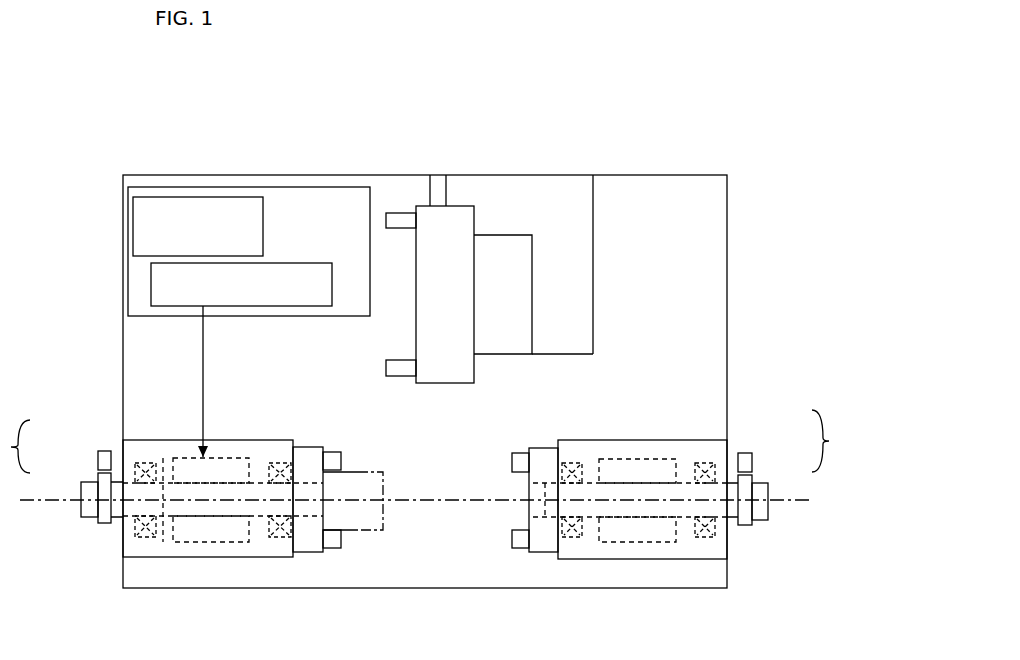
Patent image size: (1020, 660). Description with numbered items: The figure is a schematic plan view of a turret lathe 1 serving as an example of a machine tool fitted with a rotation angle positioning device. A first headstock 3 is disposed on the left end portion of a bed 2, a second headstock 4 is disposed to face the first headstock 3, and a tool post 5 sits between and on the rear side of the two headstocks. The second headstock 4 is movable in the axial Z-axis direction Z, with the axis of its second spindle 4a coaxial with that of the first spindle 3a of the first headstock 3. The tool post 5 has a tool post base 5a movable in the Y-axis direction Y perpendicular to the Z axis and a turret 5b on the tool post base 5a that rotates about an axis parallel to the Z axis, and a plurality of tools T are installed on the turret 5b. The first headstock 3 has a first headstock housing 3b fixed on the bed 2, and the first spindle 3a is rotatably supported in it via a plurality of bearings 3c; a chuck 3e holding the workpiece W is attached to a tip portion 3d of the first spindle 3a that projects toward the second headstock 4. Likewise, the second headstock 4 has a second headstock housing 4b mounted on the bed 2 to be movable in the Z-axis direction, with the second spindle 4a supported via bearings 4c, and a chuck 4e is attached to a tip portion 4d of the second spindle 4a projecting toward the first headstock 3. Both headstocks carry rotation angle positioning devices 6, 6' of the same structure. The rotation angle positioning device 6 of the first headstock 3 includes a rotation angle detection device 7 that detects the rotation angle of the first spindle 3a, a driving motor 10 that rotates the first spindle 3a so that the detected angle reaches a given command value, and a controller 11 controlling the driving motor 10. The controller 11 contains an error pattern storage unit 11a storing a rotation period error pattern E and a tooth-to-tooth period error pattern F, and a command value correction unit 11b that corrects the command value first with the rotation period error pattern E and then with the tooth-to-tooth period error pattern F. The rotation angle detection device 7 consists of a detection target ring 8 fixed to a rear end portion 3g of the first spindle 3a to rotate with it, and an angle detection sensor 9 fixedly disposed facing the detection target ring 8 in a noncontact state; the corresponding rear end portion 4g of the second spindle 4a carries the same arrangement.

The turret lathe 1 is at (533, 118).
The bed 2 is at (665, 191).
The first headstock 3 is at (148, 435).
The first spindle 3a is at (163, 458).
The first headstock housing 3b is at (248, 440).
The bearings 3c is at (145, 464).
The tip portion 3d is at (303, 482).
The chuck 3e is at (318, 447).
The rear end portion 3g is at (88, 512).
The second headstock 4 is at (714, 439).
The second spindle 4a is at (680, 458).
The second headstock housing 4b is at (607, 440).
The bearings 4c is at (572, 463).
The tip portion 4d is at (545, 483).
The chuck 4e is at (532, 447).
The rear end portion 4g is at (760, 520).
The tool post 5 is at (598, 212).
The tool post base 5a is at (580, 264).
The turret 5b is at (430, 200).
The rotation angle positioning device 6 is at (197, 602).
The rotation angle positioning device 6' is at (629, 599).
The rotation angle detection device 7 is at (420, 441).
The detection target ring 8 is at (83, 482).
The angle detection sensor 9 is at (98, 458).
The driving motor 10 is at (230, 457).
The controller 11 is at (247, 186).
The error pattern storage unit 11a is at (133, 227).
The command value correction unit 11b is at (151, 277).
The rotation period error pattern E is at (168, 196).
The tooth-to-tooth period error pattern F is at (204, 196).
The tools T is at (386, 218).
The workpiece W is at (358, 468).
The Y-axis direction Y is at (503, 377).
The Z-axis direction Z is at (488, 502).